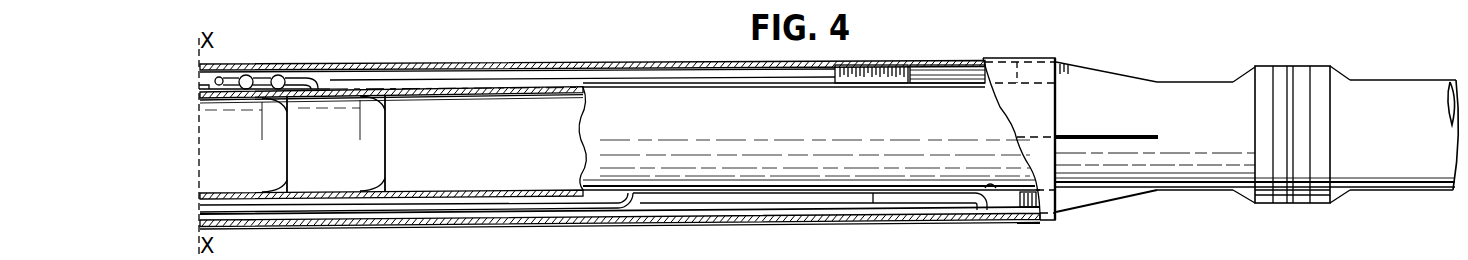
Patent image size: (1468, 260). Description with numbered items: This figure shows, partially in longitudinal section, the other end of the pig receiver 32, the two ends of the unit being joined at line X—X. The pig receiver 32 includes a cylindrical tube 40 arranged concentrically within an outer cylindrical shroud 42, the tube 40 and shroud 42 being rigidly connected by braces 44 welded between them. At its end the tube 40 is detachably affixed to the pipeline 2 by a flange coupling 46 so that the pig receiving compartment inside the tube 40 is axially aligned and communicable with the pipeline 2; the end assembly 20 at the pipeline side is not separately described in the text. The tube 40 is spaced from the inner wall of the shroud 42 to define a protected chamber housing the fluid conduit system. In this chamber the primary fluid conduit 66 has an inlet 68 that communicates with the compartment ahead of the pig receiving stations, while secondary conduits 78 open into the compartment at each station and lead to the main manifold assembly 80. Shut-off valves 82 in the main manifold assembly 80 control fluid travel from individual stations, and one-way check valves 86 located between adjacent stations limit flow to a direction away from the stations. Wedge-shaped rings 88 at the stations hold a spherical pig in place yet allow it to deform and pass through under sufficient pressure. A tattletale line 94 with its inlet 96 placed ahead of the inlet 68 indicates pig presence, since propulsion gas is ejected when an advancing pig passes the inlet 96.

The pipeline 2 is at (1402, 93).
The end assembly 20 is at (1378, 58).
The pig receiver 32 is at (619, 46).
The cylindrical tube 40 is at (498, 88).
The outer cylindrical shroud 42 is at (478, 223).
The braces 44 is at (1086, 72).
The flange coupling 46 is at (1278, 64).
The primary fluid conduit 66 is at (528, 211).
The inlet 68 is at (645, 194).
The secondary conduits 78 is at (320, 80).
The main manifold assembly 80 is at (262, 76).
The shut-off valves 82 is at (283, 75).
The one-way check valves 86 is at (246, 74).
The rings 88 is at (297, 200).
The tattletale line 94 is at (753, 211).
The inlet 96 is at (994, 188).